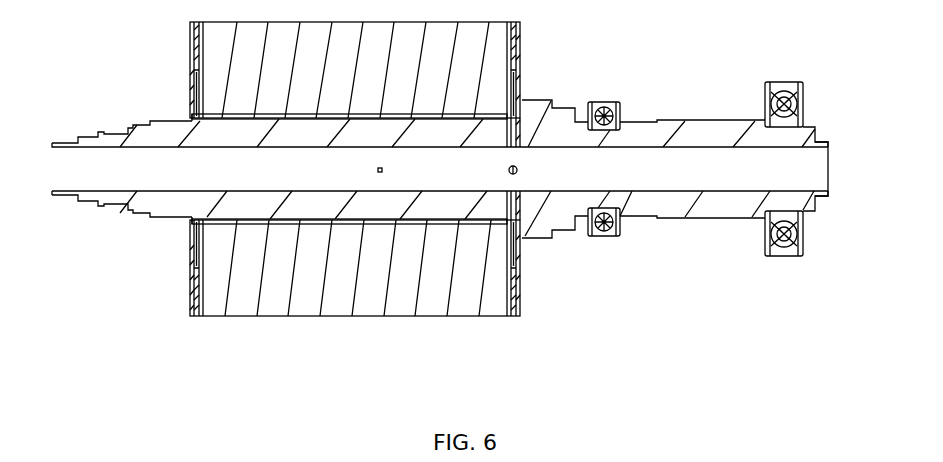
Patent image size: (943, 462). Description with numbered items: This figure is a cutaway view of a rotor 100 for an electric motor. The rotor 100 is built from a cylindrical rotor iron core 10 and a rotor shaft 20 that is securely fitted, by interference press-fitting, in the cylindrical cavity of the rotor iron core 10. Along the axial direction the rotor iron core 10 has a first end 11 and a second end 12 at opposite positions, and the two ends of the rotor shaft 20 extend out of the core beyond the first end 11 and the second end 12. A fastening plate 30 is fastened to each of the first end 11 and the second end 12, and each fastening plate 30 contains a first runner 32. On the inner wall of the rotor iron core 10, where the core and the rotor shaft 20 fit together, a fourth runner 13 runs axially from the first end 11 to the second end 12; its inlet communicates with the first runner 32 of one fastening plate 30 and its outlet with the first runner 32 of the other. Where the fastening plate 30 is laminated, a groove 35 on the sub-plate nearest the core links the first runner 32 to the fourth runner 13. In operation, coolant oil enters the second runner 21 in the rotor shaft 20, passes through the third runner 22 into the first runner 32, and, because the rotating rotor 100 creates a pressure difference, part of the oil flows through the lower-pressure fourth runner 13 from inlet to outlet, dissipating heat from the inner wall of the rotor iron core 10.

The rotor 100 is at (78, 70).
The rotor iron core 10 is at (340, 317).
The first end 11 is at (507, 31).
The second end 12 is at (203, 33).
The fourth runner 13 is at (300, 119).
The rotor shaft 20 is at (677, 218).
The second runner 21 is at (815, 171).
The third runner 22 is at (517, 142).
The fastening plate 30 is at (190, 62).
The first runner 32 is at (192, 95).
The groove 35 is at (197, 121).